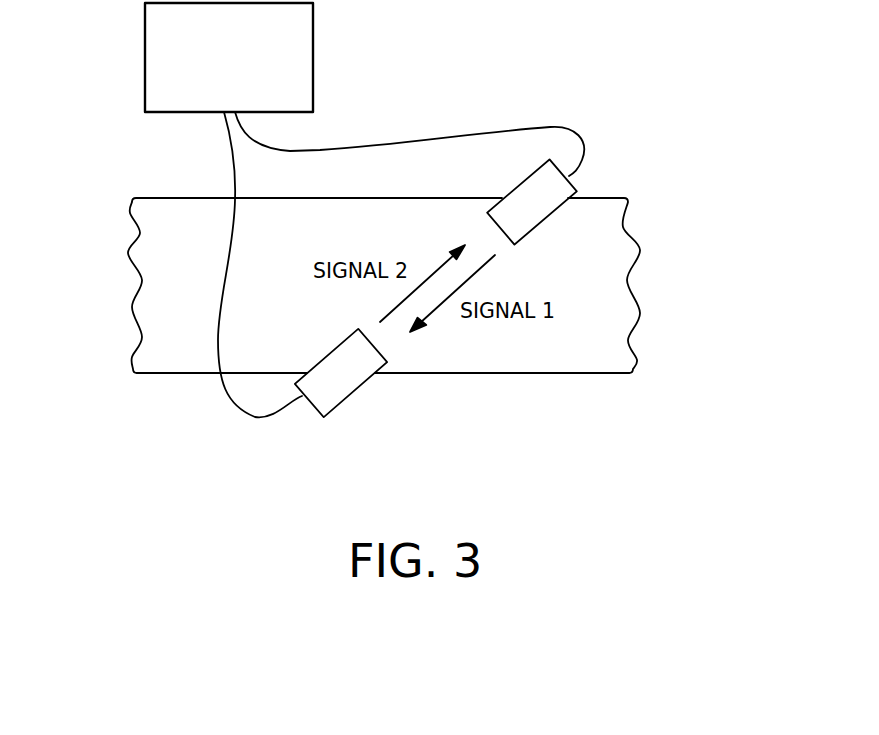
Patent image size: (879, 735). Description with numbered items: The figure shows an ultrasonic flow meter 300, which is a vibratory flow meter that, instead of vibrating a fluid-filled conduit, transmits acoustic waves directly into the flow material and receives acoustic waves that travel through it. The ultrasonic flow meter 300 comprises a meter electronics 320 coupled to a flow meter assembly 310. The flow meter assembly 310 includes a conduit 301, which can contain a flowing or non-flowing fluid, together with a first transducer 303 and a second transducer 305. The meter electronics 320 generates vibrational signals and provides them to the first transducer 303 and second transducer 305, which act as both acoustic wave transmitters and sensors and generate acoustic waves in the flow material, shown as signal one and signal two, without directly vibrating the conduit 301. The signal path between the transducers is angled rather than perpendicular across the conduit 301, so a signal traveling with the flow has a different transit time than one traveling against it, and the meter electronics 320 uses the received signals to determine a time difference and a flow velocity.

The ultrasonic flow meter 300 is at (110, 501).
The conduit 301 is at (185, 373).
The first transducer 303 is at (581, 186).
The second transducer 305 is at (347, 397).
The flow meter assembly 310 is at (464, 287).
The meter electronics 320 is at (249, 104).